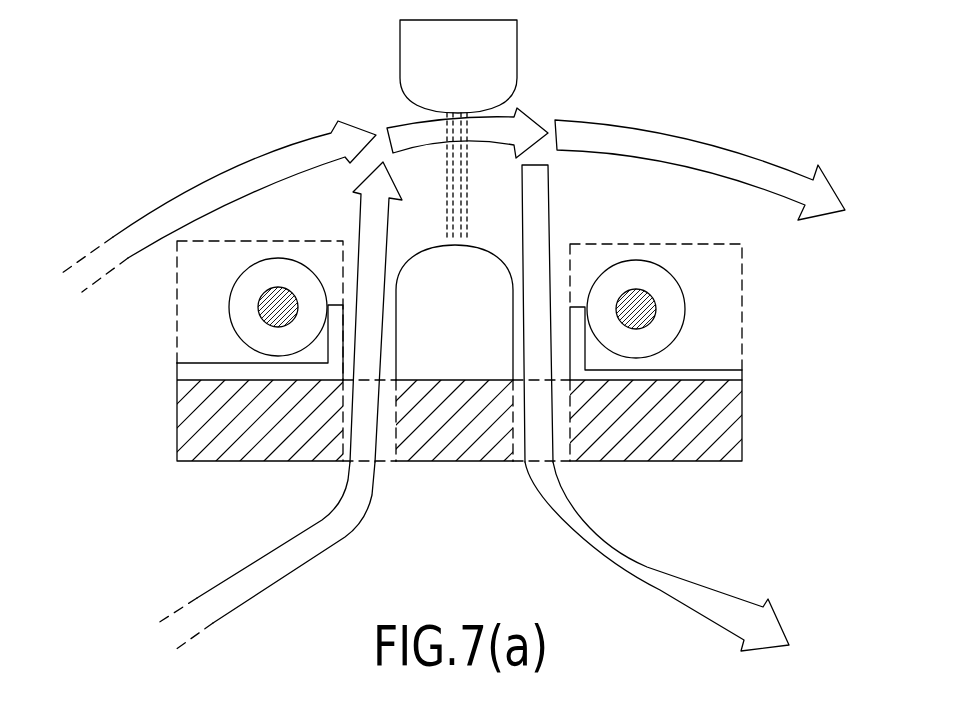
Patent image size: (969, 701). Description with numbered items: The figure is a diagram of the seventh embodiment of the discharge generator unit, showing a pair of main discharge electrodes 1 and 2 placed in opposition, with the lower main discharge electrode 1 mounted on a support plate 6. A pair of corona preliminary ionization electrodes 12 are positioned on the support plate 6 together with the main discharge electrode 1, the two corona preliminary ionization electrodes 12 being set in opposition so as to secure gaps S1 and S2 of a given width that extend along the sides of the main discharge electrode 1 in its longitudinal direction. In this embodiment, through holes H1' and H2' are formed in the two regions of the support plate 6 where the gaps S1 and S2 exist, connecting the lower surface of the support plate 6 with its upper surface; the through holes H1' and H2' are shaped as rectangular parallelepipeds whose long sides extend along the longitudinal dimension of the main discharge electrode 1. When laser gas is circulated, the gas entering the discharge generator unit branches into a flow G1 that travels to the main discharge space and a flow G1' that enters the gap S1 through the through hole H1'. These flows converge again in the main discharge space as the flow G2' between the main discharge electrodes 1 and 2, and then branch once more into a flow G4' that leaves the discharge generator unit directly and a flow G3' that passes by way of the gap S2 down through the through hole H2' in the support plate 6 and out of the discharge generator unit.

The main discharge electrode 1 is at (434, 268).
The main discharge electrode 2 is at (500, 62).
The support plate 6 is at (718, 416).
The corona preliminary ionization electrodes 12 is at (192, 305).
The gap S1 is at (387, 337).
The gap S2 is at (517, 345).
The through hole H1' is at (403, 344).
The through hole H2' is at (516, 350).
The laser gas flow G1 is at (219, 192).
The laser gas flow G1' is at (265, 556).
The laser gas flow G2' is at (507, 115).
The laser gas flow G3' is at (657, 556).
The laser gas flow G4' is at (700, 152).